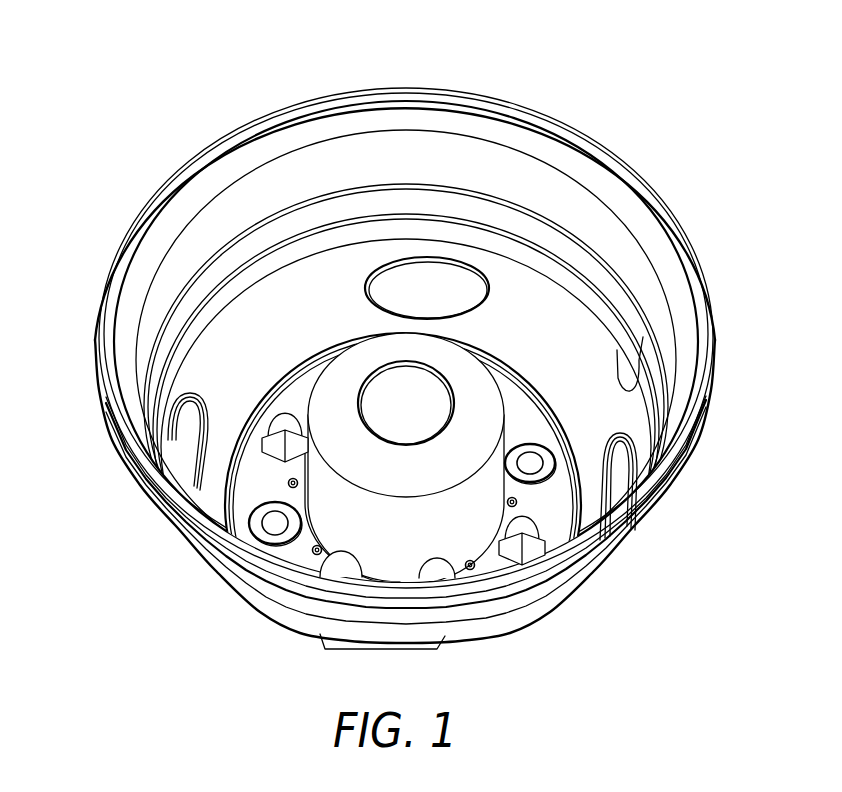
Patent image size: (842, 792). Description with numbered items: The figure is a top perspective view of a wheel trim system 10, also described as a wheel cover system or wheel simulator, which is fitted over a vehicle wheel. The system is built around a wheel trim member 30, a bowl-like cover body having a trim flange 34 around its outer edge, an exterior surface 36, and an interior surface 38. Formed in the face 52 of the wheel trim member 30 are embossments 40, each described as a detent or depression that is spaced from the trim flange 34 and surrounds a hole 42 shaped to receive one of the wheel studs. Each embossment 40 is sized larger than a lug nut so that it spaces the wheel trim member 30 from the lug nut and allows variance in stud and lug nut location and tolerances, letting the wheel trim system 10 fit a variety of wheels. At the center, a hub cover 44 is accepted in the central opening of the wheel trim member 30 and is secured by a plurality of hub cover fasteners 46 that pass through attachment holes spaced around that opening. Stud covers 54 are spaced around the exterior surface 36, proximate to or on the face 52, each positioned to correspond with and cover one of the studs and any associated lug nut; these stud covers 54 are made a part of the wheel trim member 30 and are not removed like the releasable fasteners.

The wheel trim system 10 is at (734, 80).
The wheel trim member 30 is at (710, 195).
The trim flange 34 is at (706, 418).
The exterior surface 36 is at (617, 350).
The interior surface 38 is at (602, 545).
The embossment 40 is at (250, 524).
The hole 42 is at (272, 526).
The hub cover 44 is at (318, 410).
The hub cover fasteners 46 is at (293, 483).
The face 52 is at (514, 410).
The stud covers 54 is at (285, 413).